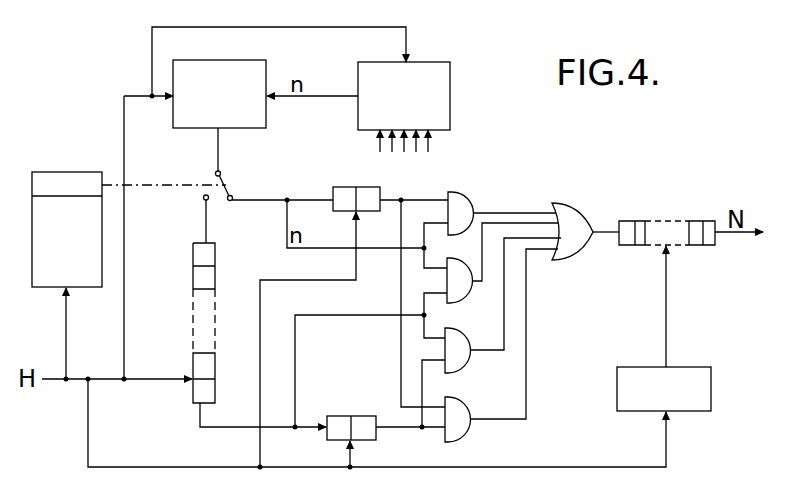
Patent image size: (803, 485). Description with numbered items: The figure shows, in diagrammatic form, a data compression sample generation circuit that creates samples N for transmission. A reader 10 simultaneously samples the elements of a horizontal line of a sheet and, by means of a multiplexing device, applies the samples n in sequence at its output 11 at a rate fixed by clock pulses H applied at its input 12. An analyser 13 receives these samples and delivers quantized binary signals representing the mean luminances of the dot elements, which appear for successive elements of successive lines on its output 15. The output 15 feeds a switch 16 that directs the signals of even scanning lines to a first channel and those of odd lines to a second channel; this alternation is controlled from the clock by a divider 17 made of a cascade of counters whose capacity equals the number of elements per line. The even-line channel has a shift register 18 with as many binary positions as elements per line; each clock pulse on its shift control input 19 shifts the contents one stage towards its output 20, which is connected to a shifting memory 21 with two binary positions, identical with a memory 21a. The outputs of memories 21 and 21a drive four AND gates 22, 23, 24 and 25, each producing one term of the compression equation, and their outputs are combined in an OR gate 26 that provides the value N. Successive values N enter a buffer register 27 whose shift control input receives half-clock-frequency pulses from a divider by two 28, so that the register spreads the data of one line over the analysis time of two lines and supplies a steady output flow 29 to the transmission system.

The reader 10 is at (450, 98).
The output 11 is at (348, 98).
The input 12 is at (405, 44).
The analyser 13 is at (238, 71).
The output 15 is at (216, 144).
The switch 16 is at (222, 181).
The divider 17 is at (43, 278).
The shift register 18 is at (192, 284).
The shift control input 19 is at (168, 379).
The output 20 is at (200, 408).
The shifting memory 21 is at (350, 415).
The memory 21a is at (353, 178).
The AND gate 22 is at (465, 363).
The AND gate 23 is at (470, 183).
The AND gate 24 is at (458, 292).
The AND gate 25 is at (463, 437).
The OR gate 26 is at (572, 210).
The buffer register 27 is at (650, 220).
The divider by two 28 is at (690, 370).
The output line N 29 is at (717, 237).